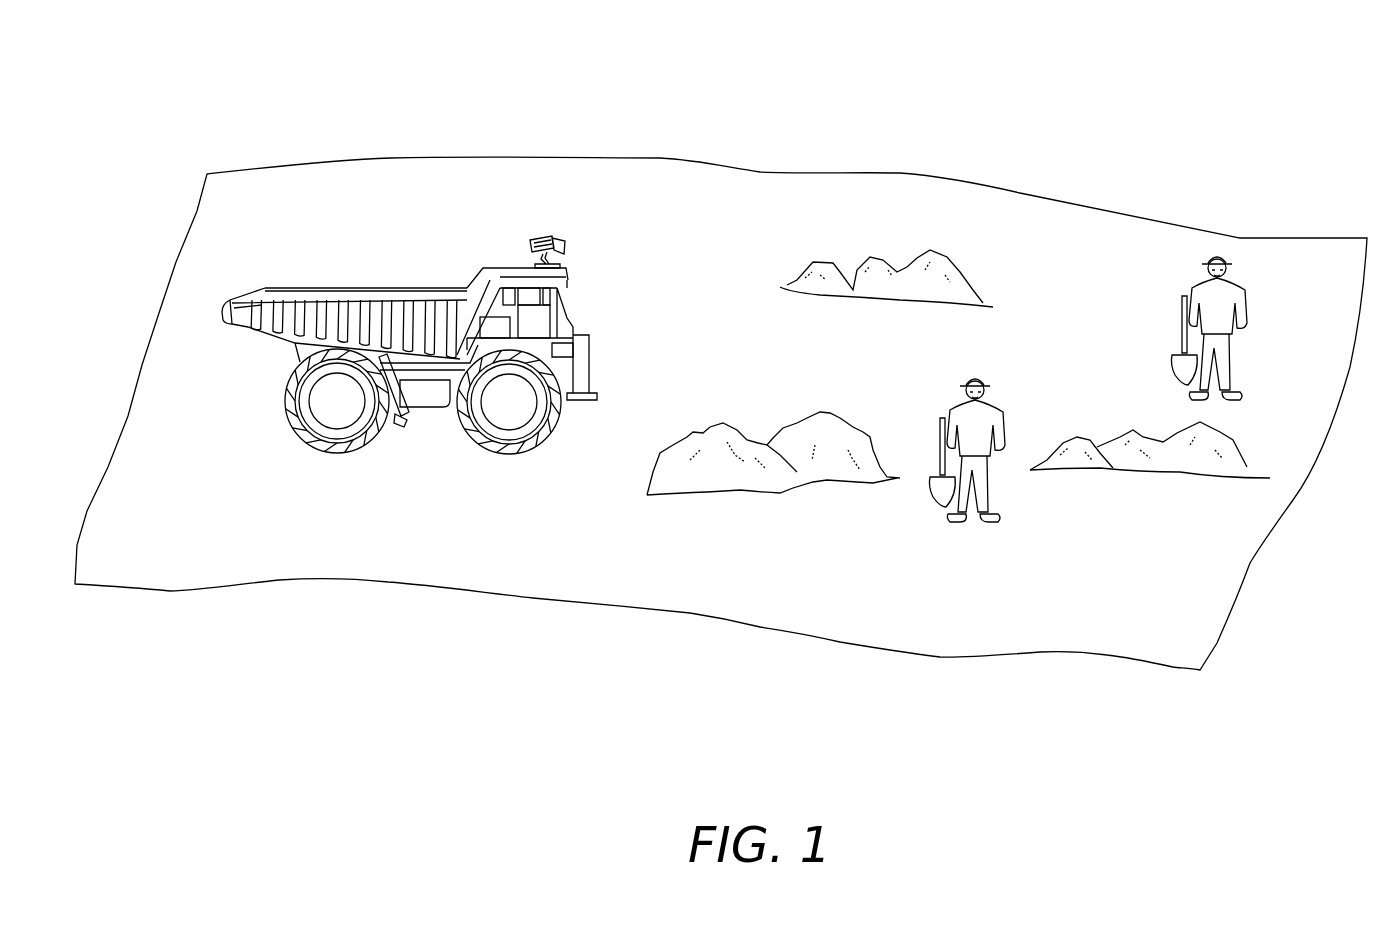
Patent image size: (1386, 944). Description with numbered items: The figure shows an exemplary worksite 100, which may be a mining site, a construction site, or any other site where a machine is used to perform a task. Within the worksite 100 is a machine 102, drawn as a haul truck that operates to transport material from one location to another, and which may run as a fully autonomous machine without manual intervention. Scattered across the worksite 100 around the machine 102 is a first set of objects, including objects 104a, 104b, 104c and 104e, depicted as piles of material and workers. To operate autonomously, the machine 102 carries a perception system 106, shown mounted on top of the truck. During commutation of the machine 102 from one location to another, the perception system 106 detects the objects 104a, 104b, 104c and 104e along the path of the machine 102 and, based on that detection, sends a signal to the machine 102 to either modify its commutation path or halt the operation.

The worksite 100 is at (1174, 88).
The machine 102 is at (340, 279).
The object 104a is at (953, 258).
The object 104b is at (833, 410).
The object 104c is at (990, 397).
The object 104e is at (1077, 433).
The perception system 106 is at (560, 227).